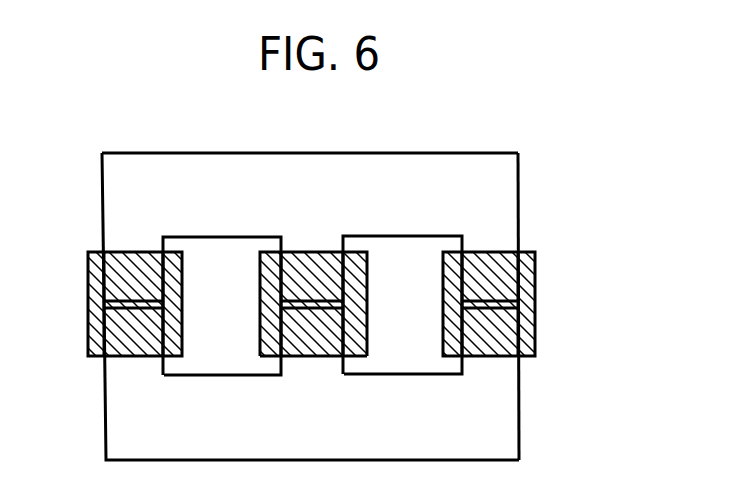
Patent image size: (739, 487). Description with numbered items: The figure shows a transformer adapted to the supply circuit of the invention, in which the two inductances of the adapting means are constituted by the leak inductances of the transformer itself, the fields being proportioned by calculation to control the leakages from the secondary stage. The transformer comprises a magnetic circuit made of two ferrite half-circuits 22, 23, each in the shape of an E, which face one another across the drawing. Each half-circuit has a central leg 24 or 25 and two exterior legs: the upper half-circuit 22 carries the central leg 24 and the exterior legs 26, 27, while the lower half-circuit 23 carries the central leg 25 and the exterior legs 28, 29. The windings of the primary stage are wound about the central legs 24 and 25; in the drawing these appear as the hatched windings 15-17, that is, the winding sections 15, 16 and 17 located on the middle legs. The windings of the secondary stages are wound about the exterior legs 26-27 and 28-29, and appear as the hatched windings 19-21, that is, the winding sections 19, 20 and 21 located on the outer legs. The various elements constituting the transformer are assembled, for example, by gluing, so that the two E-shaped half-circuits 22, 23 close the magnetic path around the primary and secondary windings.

The upper winding sections 15-17 is at (300, 253).
The first upper winding section 15 is at (135, 280).
The second upper winding section 16 is at (313, 280).
The third upper winding section 17 is at (489, 280).
The lower winding sections 19-21 is at (492, 358).
The first lower winding section 19 is at (135, 332).
The second lower winding section 20 is at (313, 332).
The third lower winding section 21 is at (489, 332).
The ferrite half-circuit 22 is at (117, 182).
The ferrite half-circuit 23 is at (117, 425).
The central leg 24 is at (318, 235).
The central leg 25 is at (320, 357).
The exterior leg 26 is at (117, 237).
The exterior leg 27 is at (490, 233).
The exterior leg 28 is at (117, 373).
The exterior leg 29 is at (507, 362).